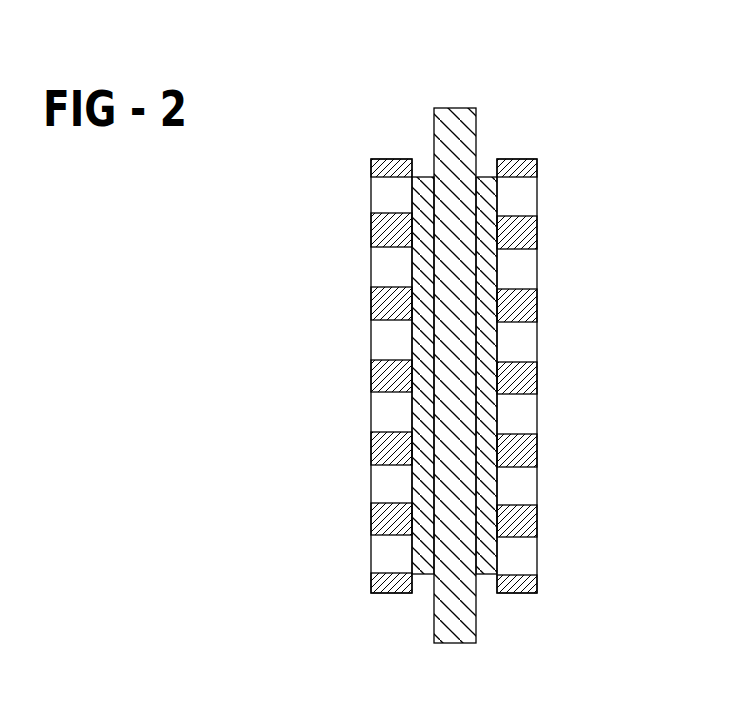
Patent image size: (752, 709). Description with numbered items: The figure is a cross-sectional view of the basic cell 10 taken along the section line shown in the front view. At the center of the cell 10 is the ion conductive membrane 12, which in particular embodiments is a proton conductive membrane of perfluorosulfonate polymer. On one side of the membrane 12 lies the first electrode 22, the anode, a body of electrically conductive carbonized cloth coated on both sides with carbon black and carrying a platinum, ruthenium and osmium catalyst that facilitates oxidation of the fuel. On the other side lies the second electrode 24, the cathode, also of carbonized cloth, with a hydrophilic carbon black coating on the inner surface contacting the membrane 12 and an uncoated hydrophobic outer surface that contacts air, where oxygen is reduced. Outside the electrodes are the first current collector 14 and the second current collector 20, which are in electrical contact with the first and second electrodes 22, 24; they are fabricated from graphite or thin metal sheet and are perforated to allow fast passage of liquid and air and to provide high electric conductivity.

The cell 10 is at (318, 163).
The ion conductive membrane 12 is at (455, 108).
The first current collector 14 is at (537, 164).
The second current collector 20 is at (388, 309).
The first electrode 22 is at (428, 208).
The second electrode 24 is at (487, 272).